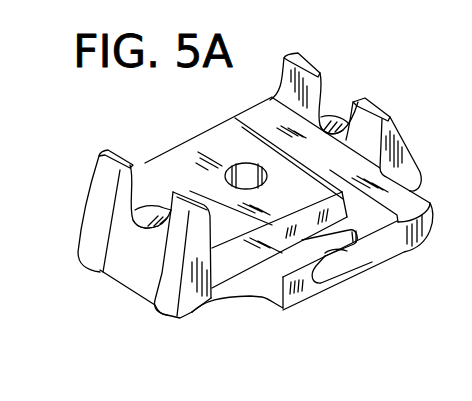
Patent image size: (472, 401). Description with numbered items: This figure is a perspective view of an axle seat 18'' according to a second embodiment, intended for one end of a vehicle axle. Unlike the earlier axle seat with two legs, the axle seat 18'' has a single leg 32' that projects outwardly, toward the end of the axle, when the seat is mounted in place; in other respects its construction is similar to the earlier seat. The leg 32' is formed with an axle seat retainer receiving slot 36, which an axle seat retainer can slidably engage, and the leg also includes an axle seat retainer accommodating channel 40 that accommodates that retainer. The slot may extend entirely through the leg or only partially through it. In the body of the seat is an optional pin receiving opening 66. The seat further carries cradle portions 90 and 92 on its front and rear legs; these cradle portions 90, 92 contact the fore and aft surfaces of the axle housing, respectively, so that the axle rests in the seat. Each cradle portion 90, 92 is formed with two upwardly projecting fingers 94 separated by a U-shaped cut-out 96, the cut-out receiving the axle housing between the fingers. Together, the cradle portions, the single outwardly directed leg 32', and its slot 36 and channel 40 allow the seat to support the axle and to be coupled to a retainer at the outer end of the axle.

The axle seat 18'' is at (235, 236).
The leg 32' is at (266, 276).
The axle seat retainer receiving slot 36 is at (329, 248).
The axle seat retainer accommodating channel 40 is at (326, 268).
The pin receiving opening 66 is at (240, 178).
The cradle portion 90 is at (382, 112).
The cradle portion 92 is at (190, 185).
The upwardly projecting finger 94 is at (93, 222).
The U-shaped cut-out 96 is at (120, 203).